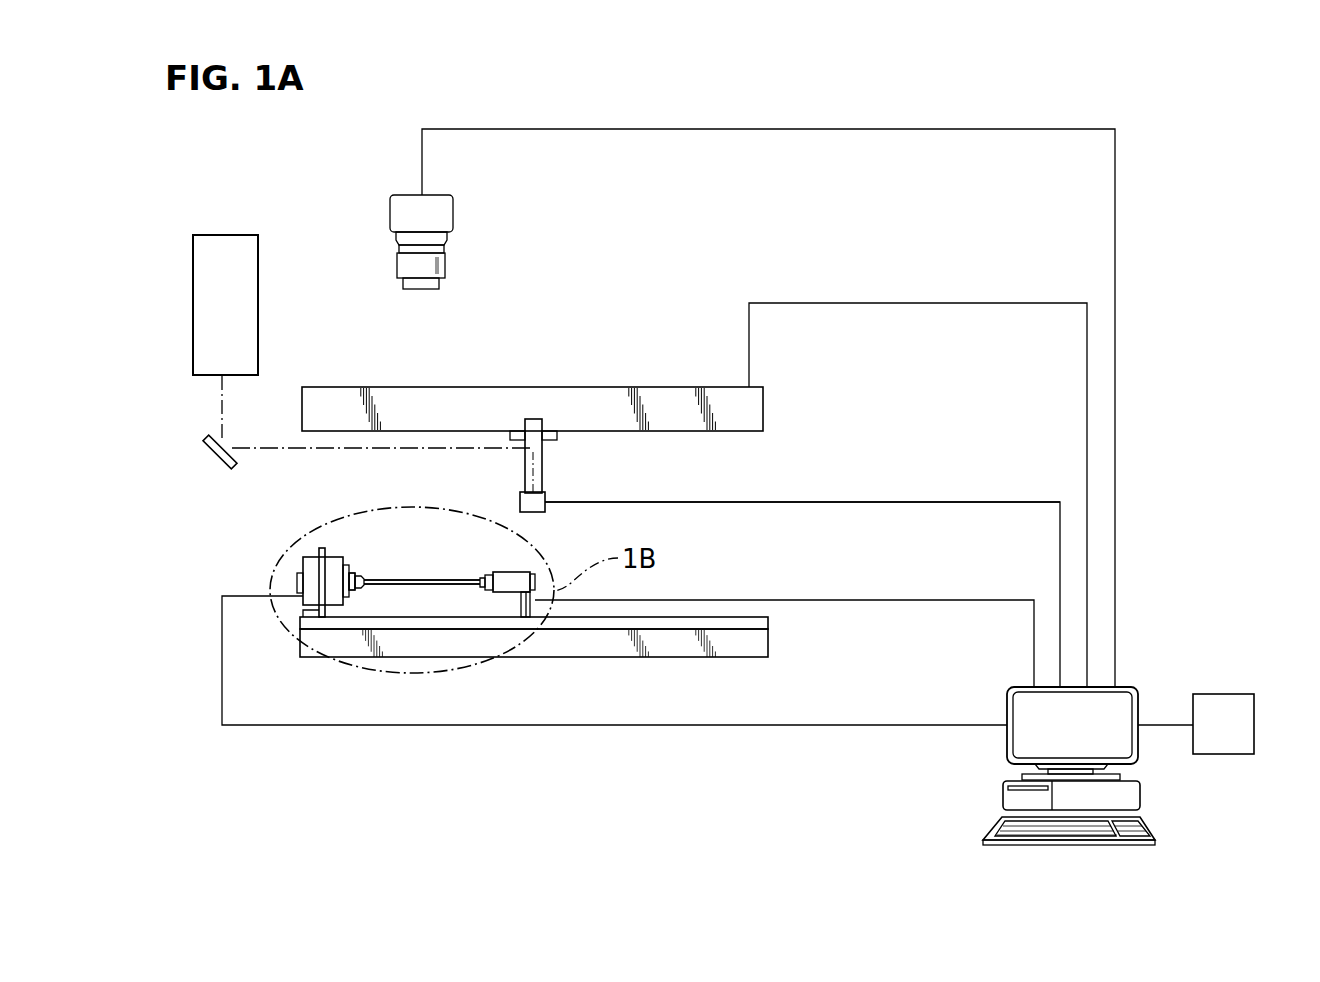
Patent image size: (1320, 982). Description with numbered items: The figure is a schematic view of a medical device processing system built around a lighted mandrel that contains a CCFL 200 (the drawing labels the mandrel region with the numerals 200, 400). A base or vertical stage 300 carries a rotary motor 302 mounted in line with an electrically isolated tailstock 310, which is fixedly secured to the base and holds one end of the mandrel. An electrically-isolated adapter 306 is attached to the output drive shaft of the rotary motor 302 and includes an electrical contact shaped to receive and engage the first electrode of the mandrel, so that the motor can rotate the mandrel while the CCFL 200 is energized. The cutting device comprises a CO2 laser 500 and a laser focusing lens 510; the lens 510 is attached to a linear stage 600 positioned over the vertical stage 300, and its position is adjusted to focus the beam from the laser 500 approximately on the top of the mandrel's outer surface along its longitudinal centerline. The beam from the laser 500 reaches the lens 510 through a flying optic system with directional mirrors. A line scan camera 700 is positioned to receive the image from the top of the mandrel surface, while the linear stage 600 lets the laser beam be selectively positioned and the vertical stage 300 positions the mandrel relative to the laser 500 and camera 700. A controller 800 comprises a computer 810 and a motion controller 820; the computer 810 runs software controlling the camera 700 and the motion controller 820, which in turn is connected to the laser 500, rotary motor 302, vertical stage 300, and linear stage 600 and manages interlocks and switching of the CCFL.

The CCFL 200 is at (462, 574).
The coating on rod 400 is at (422, 582).
The vertical stage 300 is at (558, 642).
The rotary motor 302 is at (296, 583).
The electrically-isolated adapter 306 is at (357, 568).
The tailstock 310 is at (818, 506).
The CO2 laser 500 is at (227, 233).
The laser focusing lens 510 is at (548, 498).
The linear stage 600 is at (725, 434).
The line scan camera 700 is at (454, 213).
The controller 800 is at (1015, 753).
The computer 810 is at (1004, 703).
The motion controller 820 is at (1233, 694).